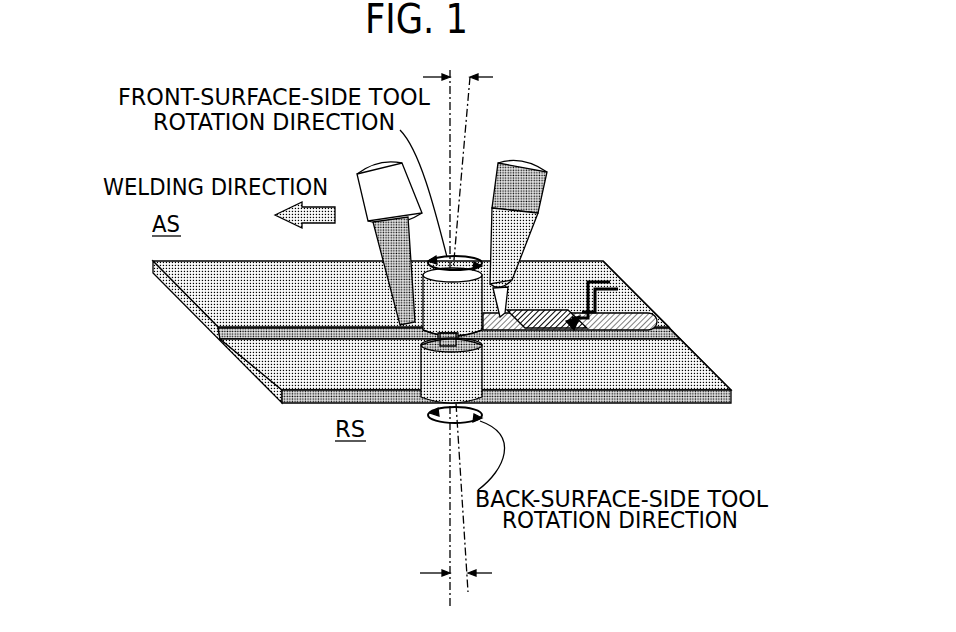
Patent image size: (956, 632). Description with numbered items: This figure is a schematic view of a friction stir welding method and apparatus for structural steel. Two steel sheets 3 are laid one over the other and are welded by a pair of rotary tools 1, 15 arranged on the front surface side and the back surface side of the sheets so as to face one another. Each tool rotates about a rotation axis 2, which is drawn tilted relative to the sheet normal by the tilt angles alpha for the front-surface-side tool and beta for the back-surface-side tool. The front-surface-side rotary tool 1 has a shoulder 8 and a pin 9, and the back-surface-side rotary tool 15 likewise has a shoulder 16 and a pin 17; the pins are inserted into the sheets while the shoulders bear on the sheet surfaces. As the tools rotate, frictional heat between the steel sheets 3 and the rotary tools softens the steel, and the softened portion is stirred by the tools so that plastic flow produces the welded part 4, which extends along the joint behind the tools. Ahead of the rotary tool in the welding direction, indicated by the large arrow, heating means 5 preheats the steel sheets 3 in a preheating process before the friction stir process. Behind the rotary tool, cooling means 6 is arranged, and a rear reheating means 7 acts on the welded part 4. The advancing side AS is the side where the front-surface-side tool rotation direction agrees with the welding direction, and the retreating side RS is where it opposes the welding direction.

The rotary tool 1 is at (436, 311).
The rotation axis 2 is at (468, 110).
The steel sheet 3 is at (608, 268).
The welded part 4 is at (640, 313).
The heating means 5 is at (363, 168).
The cooling means 6 is at (545, 185).
The rear reheating means 7 is at (542, 307).
The shoulder of the rotary tool 8 is at (417, 328).
The pin of the rotary tool 9 is at (460, 342).
The rotary tool 15 is at (466, 384).
The shoulder of the rotary tool 16 is at (430, 357).
The pin of the rotary tool 17 is at (457, 350).